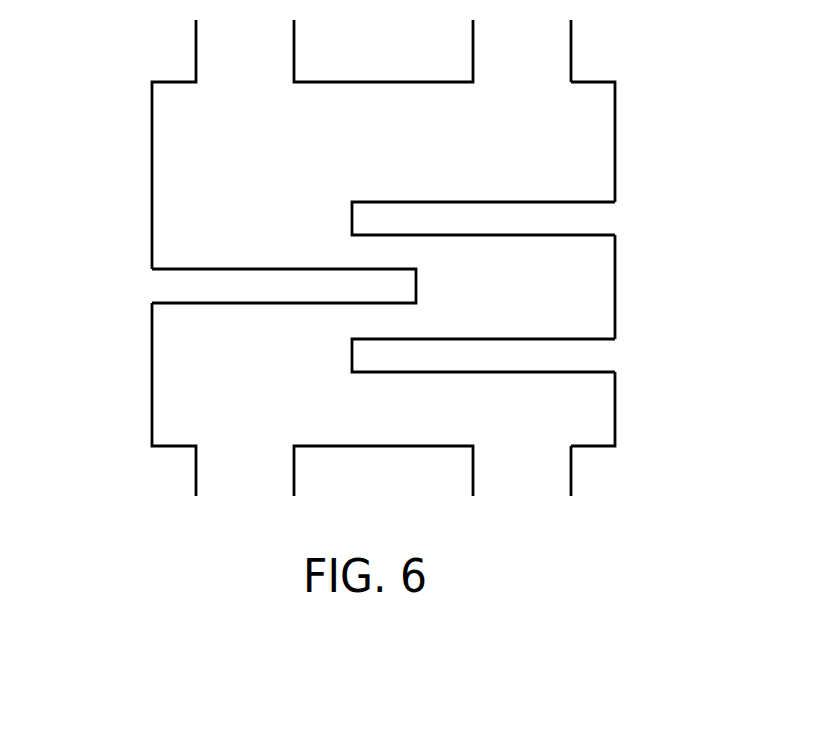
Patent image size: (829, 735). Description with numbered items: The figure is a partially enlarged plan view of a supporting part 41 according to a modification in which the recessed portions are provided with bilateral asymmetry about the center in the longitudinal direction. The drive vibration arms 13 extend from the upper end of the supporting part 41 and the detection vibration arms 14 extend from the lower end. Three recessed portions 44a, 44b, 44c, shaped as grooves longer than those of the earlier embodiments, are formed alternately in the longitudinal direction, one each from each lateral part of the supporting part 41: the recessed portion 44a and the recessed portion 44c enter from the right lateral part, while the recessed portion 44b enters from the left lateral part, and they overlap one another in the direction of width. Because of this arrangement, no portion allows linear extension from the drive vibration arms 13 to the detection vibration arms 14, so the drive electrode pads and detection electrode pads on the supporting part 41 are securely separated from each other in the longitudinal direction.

The drive vibration arm 13 is at (294, 44).
The detection vibration arm 14 is at (294, 472).
The supporting part 41 is at (615, 138).
The recessed portion 44a is at (576, 205).
The recessed portion 44b is at (196, 270).
The recessed portion 44c is at (576, 341).